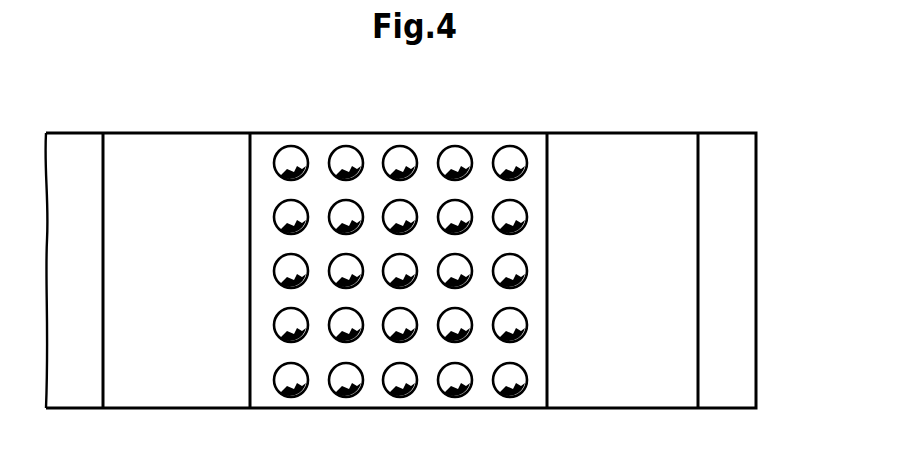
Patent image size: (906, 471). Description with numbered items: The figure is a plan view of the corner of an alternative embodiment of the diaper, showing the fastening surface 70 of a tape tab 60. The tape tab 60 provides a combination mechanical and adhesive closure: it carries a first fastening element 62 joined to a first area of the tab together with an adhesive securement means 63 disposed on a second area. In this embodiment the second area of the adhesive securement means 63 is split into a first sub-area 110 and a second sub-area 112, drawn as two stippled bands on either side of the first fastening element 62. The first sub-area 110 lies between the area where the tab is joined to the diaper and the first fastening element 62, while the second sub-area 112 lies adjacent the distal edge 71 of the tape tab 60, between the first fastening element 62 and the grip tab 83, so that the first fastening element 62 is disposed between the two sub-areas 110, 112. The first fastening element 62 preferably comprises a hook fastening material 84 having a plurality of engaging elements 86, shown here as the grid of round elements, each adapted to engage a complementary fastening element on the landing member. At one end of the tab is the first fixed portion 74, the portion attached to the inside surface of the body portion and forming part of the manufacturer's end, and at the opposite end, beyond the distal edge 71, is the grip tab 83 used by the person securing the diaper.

The tape tab 60 is at (160, 113).
The first fastening element 62 is at (373, 329).
The adhesive securement means 63 is at (133, 163).
The fastening surface 70 is at (228, 152).
The distal edge 71 is at (757, 235).
The first fixed portion 74 is at (88, 243).
The grip tab 83 is at (741, 245).
The hook fastening material 84 is at (427, 372).
The engaging elements 86 is at (502, 210).
The first sub-area 110 is at (200, 390).
The second sub-area 112 is at (623, 380).